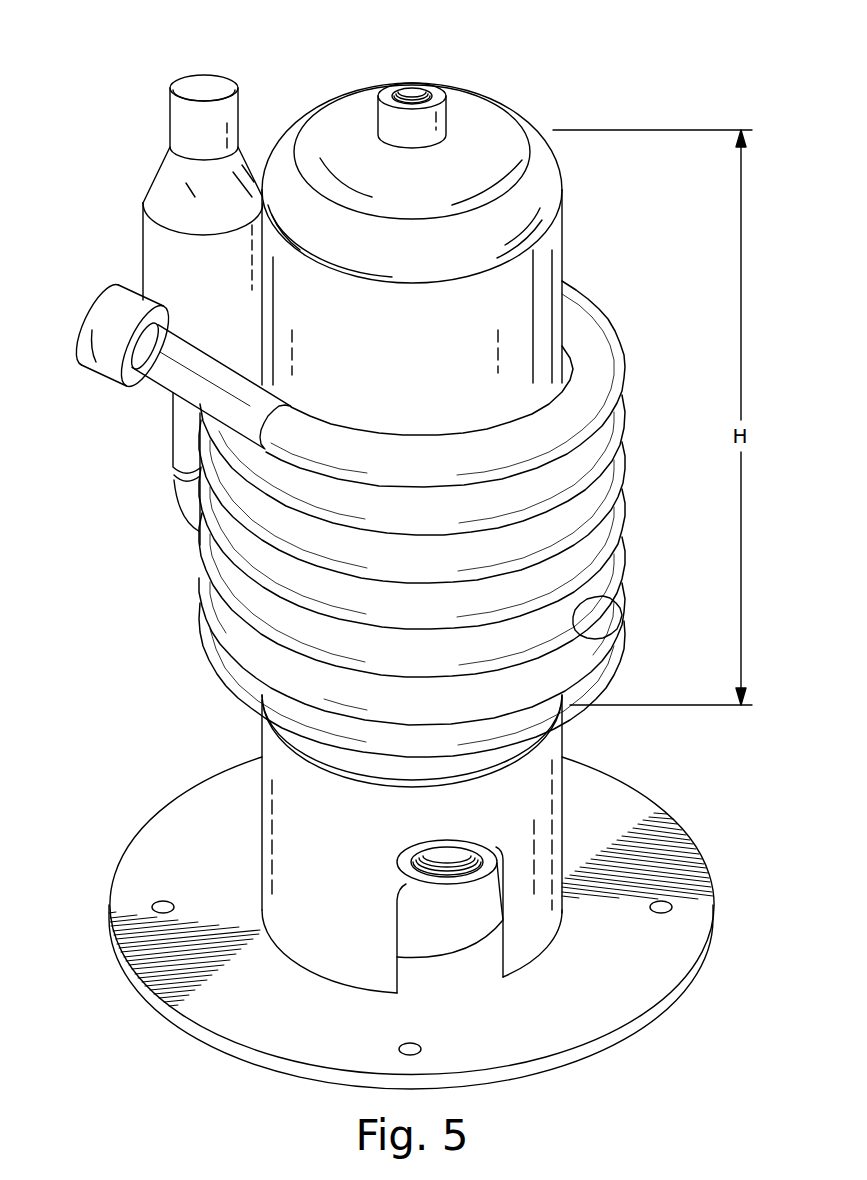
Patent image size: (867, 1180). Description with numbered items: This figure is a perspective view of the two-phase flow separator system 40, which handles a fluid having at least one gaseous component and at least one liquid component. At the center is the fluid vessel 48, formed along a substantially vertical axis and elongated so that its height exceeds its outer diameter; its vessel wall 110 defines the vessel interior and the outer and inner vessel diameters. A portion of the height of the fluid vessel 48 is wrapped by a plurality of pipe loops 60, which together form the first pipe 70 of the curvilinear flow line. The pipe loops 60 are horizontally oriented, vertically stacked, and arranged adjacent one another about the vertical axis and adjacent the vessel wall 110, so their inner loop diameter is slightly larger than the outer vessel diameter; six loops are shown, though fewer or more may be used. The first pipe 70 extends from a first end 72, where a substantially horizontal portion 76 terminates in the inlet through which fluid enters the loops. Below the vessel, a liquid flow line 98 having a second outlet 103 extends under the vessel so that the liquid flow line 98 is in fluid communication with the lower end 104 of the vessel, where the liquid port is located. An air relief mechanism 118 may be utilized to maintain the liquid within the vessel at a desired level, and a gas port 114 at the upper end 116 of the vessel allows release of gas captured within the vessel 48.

The two-phase flow separator system 40 is at (410, 198).
The fluid vessel 48 is at (574, 244).
The pipe loops 60 is at (627, 360).
The first pipe 70 is at (409, 519).
The first end 72 is at (88, 313).
The substantially horizontal portion 76 is at (157, 382).
The liquid flow line 98 is at (447, 893).
The second outlet 103 is at (396, 890).
The lower end 104 is at (333, 755).
The vessel wall 110 is at (262, 272).
The gas port 114 is at (404, 84).
The upper end 116 is at (350, 112).
The air relief mechanism 118 is at (124, 158).